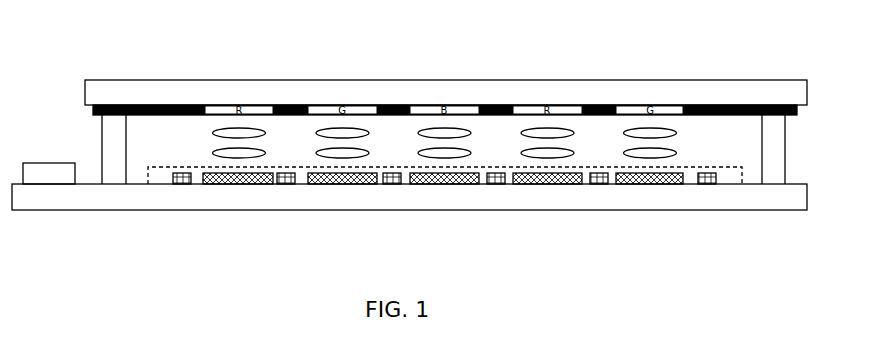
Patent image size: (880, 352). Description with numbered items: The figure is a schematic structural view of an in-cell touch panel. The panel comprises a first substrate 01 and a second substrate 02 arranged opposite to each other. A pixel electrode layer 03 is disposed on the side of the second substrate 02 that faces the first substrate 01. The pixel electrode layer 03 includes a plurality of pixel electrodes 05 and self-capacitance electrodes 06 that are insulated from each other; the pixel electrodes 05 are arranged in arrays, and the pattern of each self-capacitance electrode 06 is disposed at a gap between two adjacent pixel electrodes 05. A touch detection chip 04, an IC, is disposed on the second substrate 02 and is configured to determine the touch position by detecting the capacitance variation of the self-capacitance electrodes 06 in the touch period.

The first substrate 01 is at (155, 86).
The second substrate 02 is at (300, 200).
The pixel electrode layer 03 is at (445, 212).
The touch detection chip 04 is at (43, 185).
The pixel electrode 05 is at (650, 186).
The self-capacitance electrode 06 is at (500, 186).